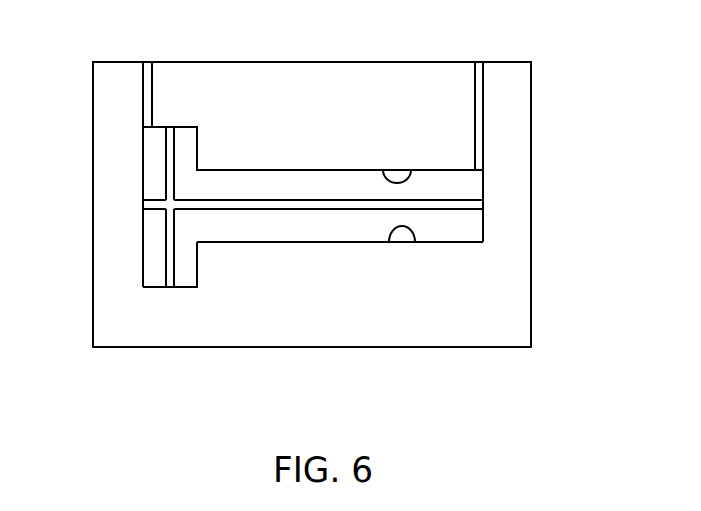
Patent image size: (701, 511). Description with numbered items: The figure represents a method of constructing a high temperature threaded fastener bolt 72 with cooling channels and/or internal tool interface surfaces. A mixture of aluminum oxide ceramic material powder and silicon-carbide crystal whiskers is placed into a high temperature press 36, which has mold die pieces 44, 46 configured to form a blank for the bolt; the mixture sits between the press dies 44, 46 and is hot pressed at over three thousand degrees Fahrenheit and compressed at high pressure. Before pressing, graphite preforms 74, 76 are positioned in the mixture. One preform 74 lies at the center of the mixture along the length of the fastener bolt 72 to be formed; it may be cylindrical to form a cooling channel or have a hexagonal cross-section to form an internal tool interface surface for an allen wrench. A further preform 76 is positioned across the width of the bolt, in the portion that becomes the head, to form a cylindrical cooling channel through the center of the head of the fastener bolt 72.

The high temperature press 36 is at (552, 190).
The mold die piece 44 is at (410, 175).
The mold die piece 46 is at (412, 246).
The fastener bolt 72 is at (271, 170).
The graphite preform 74 is at (252, 205).
The graphite preform 76 is at (168, 158).